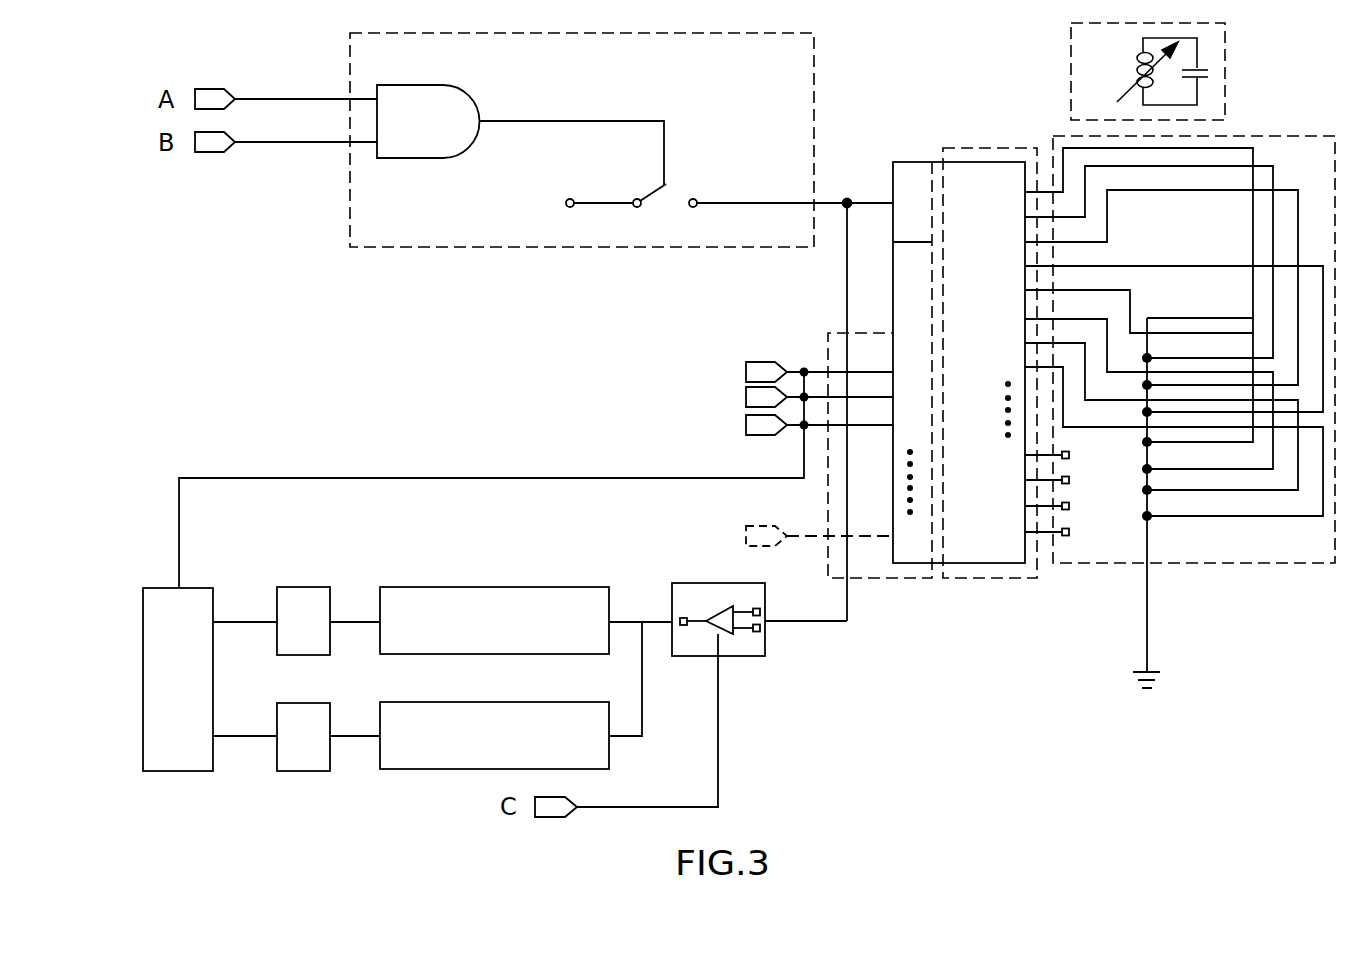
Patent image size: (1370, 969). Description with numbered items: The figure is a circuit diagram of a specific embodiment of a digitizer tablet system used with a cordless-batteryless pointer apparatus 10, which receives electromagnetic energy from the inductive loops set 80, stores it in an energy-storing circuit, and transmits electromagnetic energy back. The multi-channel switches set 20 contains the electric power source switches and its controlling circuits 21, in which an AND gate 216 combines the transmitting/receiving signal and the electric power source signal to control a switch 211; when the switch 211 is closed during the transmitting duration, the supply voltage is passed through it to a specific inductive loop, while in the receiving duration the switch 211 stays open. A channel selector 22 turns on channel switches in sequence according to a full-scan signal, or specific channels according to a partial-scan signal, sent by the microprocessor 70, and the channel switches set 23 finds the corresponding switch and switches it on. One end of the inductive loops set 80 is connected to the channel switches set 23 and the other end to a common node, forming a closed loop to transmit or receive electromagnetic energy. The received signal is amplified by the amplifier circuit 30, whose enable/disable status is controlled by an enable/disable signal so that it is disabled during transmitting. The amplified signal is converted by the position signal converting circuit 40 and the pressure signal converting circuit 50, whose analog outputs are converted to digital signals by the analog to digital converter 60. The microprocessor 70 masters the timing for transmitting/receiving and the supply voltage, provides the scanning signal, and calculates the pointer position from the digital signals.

The cordless-batteryless pointer apparatus 10 is at (1225, 68).
The multi-channel switches set 20 is at (938, 160).
The electric power source switches and its controlling circuits 21 is at (350, 197).
The AND gate 216 is at (432, 134).
The switch 211 is at (661, 207).
The channel selector 22 is at (855, 580).
The channel switches set 23 is at (1030, 580).
The amplifier circuit 30 is at (690, 583).
The position signal converting circuit 40 is at (472, 632).
The pressure signal converting circuit 50 is at (472, 747).
The analog to digital converter 60 is at (318, 634).
The microprocessor 70 is at (188, 682).
The inductive loops set 80 is at (1192, 563).